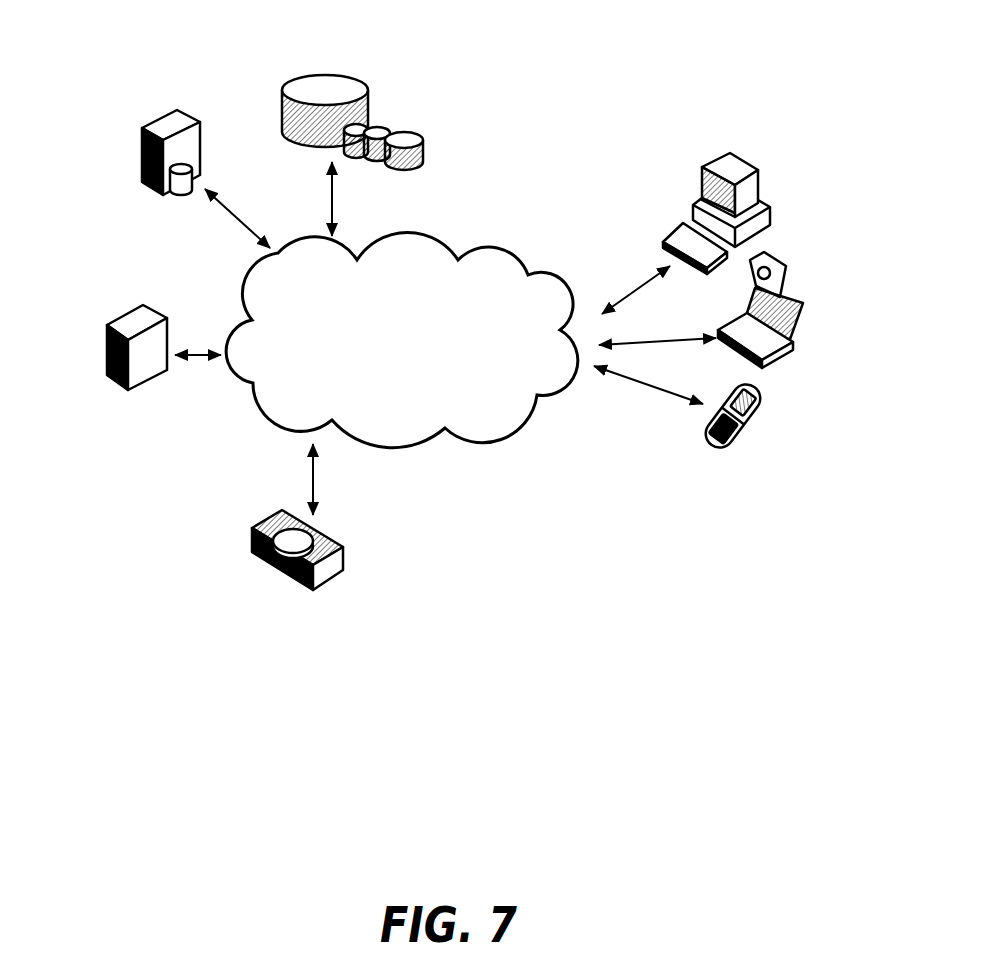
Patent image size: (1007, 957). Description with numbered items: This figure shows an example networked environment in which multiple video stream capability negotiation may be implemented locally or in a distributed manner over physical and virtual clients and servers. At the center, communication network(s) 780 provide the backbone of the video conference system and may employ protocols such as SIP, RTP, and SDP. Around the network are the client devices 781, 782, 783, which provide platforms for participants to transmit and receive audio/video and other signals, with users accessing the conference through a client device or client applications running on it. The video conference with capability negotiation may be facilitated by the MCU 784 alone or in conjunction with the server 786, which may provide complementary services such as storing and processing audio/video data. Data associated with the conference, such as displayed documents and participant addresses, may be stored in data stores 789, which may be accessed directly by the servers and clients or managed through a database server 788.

The communication network(s) 780 is at (437, 235).
The client device 781 is at (762, 150).
The client device 782 is at (794, 271).
The client device 783 is at (765, 383).
The MCU 784 is at (268, 512).
The server 786 is at (99, 330).
The database server 788 is at (178, 200).
The data stores 789 is at (342, 40).